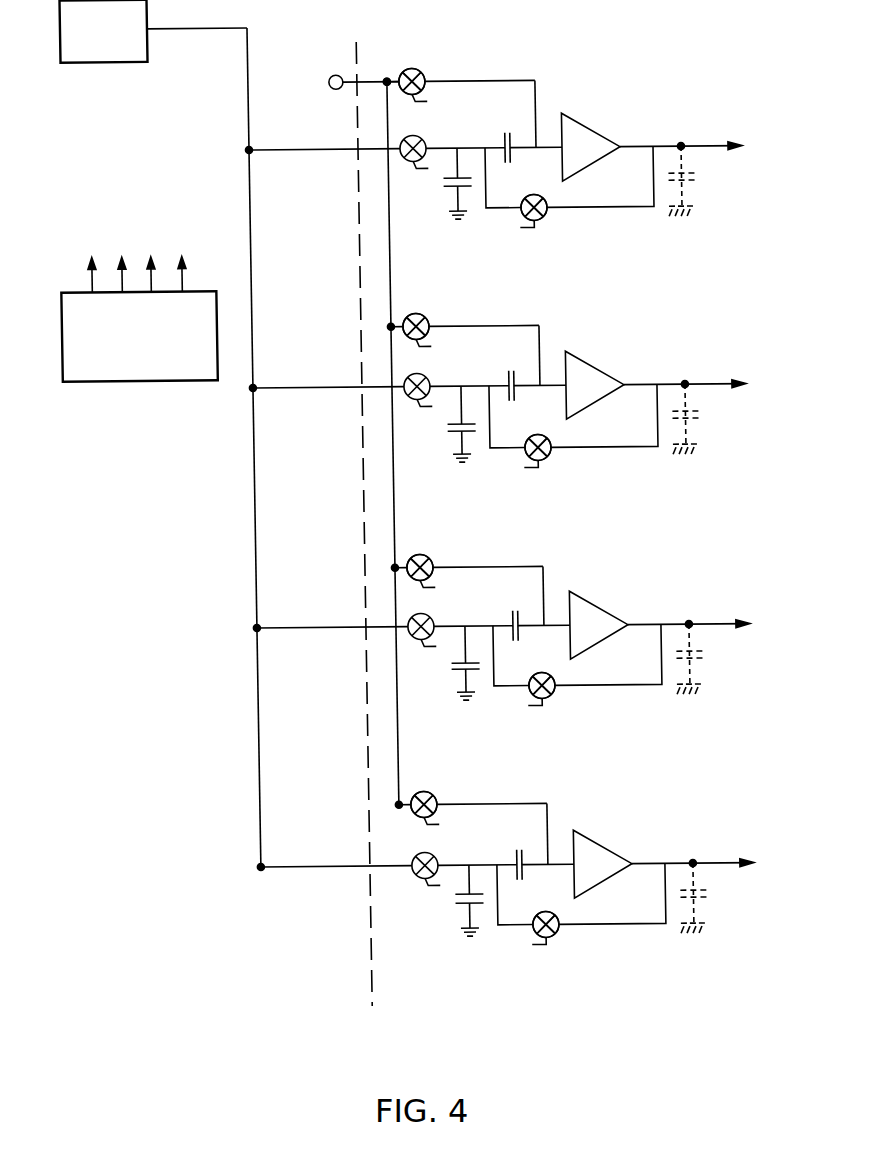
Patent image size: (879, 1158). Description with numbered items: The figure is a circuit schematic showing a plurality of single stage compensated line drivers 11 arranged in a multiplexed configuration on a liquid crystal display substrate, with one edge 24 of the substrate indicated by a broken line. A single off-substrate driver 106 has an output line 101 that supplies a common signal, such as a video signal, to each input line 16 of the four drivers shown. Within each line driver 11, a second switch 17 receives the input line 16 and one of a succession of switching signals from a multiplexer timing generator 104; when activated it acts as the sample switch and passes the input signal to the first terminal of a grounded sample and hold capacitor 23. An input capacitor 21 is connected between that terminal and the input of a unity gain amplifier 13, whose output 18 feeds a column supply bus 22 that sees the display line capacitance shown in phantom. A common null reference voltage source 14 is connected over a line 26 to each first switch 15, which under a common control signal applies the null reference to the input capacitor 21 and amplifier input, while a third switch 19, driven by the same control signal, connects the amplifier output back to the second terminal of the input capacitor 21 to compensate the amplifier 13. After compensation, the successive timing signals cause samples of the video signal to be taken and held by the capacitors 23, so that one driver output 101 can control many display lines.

The off-substrate driver 106 is at (149, 13).
The output line 101 is at (249, 297).
The multiplexer timing generator 104 is at (125, 380).
The edge 24 is at (358, 39).
The null reference voltage source 14 is at (333, 77).
The input line 16 is at (328, 493).
The second switch 17 is at (433, 510).
The sample and hold capacitor 23 is at (444, 544).
The input capacitor 21 is at (500, 501).
The unity gain amplifier 13 is at (596, 496).
The output 18 is at (657, 480).
The column supply bus 22 is at (713, 512).
The line 26 is at (464, 445).
The first switch 15 is at (436, 422).
The third switch 19 is at (575, 553).
The single stage compensated line driver 11 is at (554, 580).